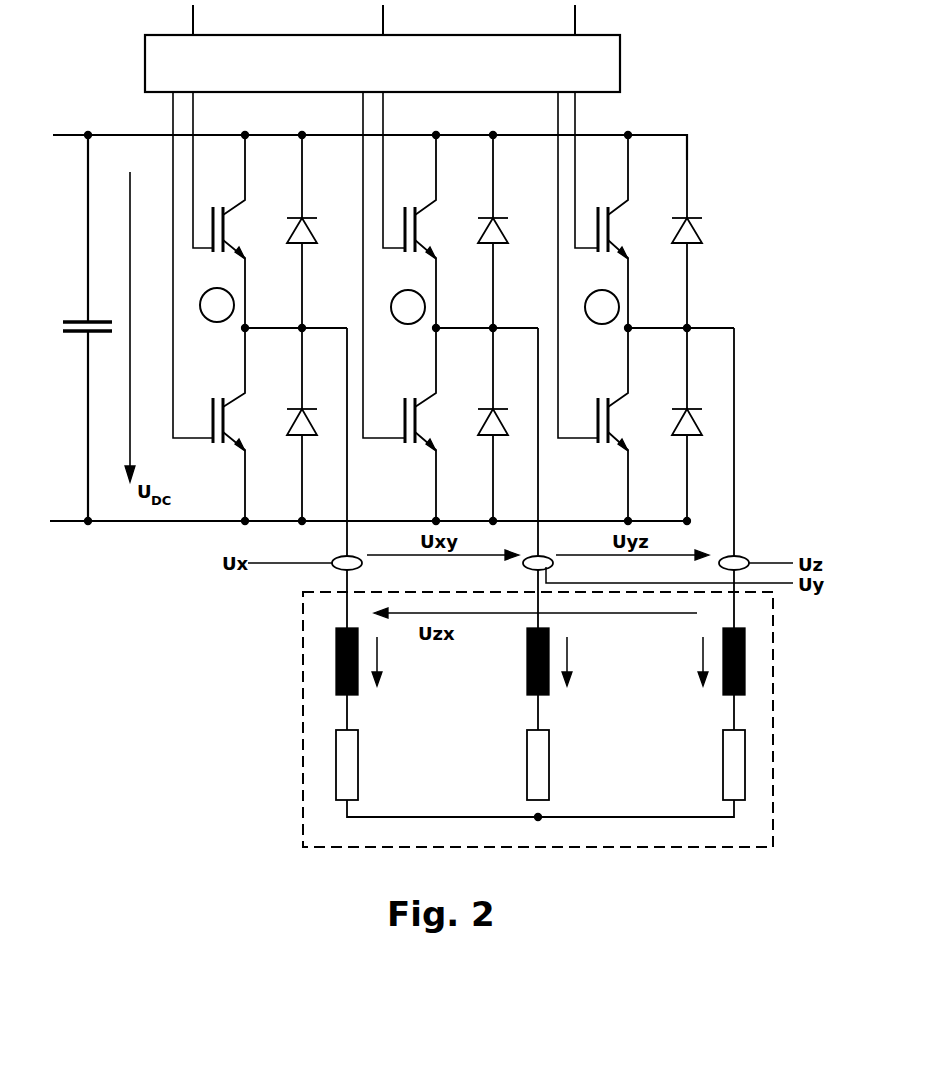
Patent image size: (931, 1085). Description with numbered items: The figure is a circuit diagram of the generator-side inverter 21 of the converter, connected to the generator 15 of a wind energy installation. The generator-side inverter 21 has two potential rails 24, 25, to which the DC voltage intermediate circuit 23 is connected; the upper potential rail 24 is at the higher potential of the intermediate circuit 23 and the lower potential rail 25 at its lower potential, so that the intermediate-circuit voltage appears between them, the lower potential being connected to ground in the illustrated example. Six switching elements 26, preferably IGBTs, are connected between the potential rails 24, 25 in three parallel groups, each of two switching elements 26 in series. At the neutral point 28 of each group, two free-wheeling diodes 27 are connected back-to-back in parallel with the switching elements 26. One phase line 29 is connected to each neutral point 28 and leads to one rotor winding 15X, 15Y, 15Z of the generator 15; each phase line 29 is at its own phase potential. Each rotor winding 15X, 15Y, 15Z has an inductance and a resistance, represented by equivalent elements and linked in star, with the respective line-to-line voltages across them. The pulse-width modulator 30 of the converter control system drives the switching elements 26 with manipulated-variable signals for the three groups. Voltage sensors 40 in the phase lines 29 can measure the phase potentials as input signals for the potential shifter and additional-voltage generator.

The generator-side inverter 21 is at (702, 124).
The intermediate circuit 23 is at (79, 122).
The upper potential rail 24 is at (63, 137).
The lower potential rail 25 is at (62, 524).
The switching elements 26 is at (212, 206).
The free-wheeling diodes 27 is at (311, 232).
The neutral point 28 is at (305, 327).
The phase line 29 is at (346, 518).
The pulse-width modulator 30 is at (620, 63).
The voltage sensors 40 is at (332, 571).
The generator 15 is at (303, 730).
The rotor winding 15X is at (336, 665).
The rotor winding 15Y is at (527, 664).
The rotor winding 15Z is at (745, 664).